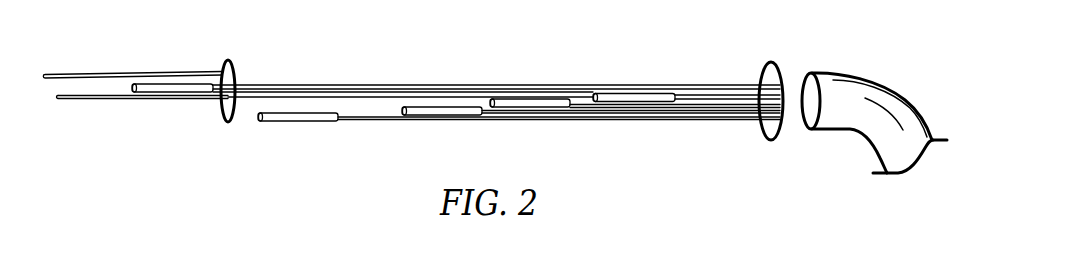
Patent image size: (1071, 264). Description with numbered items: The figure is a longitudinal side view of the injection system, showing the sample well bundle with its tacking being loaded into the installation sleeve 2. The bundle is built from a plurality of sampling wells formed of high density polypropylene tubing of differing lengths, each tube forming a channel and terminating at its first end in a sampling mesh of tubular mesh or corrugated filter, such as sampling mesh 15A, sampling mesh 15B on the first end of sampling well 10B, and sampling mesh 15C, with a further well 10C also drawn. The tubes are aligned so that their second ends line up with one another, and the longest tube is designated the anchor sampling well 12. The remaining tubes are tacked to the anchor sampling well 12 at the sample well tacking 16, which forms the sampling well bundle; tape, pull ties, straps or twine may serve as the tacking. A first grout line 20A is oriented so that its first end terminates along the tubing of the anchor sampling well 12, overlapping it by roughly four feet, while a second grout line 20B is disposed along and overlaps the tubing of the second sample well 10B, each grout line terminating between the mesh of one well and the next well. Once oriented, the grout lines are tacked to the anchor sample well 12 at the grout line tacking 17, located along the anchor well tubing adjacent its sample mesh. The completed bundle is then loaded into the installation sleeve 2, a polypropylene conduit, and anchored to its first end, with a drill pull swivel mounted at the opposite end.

The installation sleeve 2 is at (872, 78).
The anchor sampling well 12 is at (342, 85).
The sample well tacking 16 is at (762, 70).
The grout line tacking 17 is at (233, 63).
The first grout line 20A is at (93, 77).
The second grout line 20B is at (173, 95).
The sampling mesh 15A is at (172, 87).
The sampling mesh 15B is at (283, 117).
The sampling mesh 15C is at (440, 108).
The sampling well 10B is at (370, 115).
The third elongate member 10C is at (528, 110).